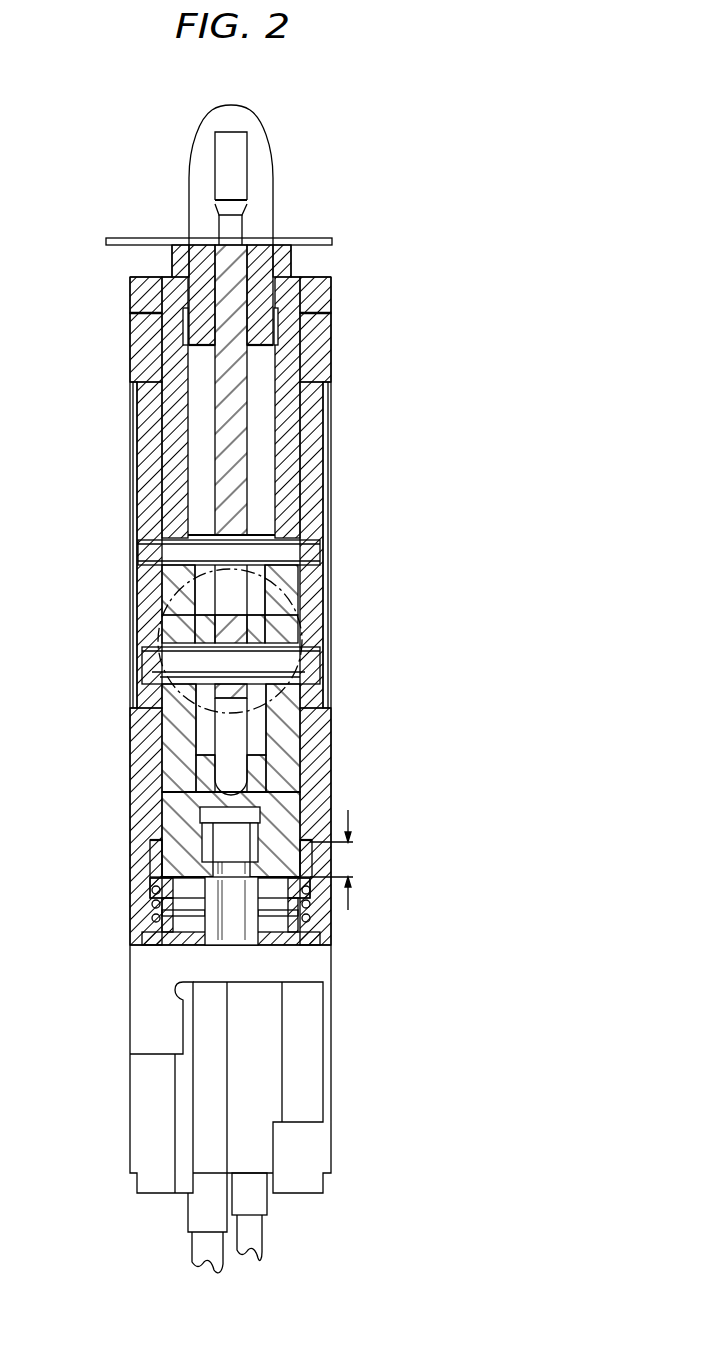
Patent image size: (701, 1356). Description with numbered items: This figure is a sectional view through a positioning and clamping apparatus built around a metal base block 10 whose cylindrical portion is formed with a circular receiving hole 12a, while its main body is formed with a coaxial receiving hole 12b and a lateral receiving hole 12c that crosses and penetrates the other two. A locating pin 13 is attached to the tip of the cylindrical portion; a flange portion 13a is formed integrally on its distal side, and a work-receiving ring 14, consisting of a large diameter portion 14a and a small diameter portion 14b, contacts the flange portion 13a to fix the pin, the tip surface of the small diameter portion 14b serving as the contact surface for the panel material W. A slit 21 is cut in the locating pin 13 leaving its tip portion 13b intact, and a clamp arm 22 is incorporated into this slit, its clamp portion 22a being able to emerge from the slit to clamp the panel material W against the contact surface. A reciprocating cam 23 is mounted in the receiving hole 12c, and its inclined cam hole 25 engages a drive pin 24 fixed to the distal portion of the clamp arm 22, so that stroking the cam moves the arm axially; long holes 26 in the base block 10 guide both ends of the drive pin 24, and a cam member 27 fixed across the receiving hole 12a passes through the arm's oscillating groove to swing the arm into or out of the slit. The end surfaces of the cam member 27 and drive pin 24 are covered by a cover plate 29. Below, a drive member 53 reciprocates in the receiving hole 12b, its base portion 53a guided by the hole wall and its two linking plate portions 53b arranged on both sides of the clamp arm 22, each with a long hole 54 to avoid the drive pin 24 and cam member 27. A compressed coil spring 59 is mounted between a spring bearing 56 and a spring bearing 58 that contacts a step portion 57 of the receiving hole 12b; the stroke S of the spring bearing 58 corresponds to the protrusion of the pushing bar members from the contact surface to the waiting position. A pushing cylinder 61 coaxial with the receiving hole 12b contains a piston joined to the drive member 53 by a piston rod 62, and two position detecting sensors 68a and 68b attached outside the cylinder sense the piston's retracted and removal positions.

The base block 10 is at (236, 667).
The receiving hole 12a is at (287, 460).
The receiving hole 12b is at (290, 807).
The receiving hole 12c is at (285, 600).
The locating pin 13 is at (254, 138).
The flange portion 13a is at (318, 345).
The tip portion 13b is at (230, 116).
The work-receiving ring 14 is at (336, 266).
The large diameter portion 14a is at (323, 300).
The small diameter portion 14b is at (178, 261).
The slit 21 is at (240, 169).
The clamp arm 22 is at (232, 413).
The clamp portion 22a is at (233, 223).
The reciprocating cam 23 is at (165, 599).
The drive pin 24 is at (287, 662).
The cam hole 25 is at (178, 678).
The long holes 26 is at (148, 635).
The cam member 27 is at (158, 553).
The cover plate 29 is at (331, 483).
The drive member 53 is at (180, 774).
The base portion 53a is at (187, 868).
The linking plate portions 53b is at (185, 744).
The long hole 54 is at (257, 732).
The spring bearing 56 is at (150, 935).
The step portion 57 is at (153, 852).
The spring bearing 58 is at (152, 889).
The compressed coil spring 59 is at (150, 906).
The pushing cylinder 61 is at (303, 1054).
The piston rod 62 is at (233, 928).
The position detecting sensor 68a is at (200, 1205).
The position detecting sensor 68b is at (257, 1205).
The panel material W is at (130, 236).
The stroke S is at (340, 860).